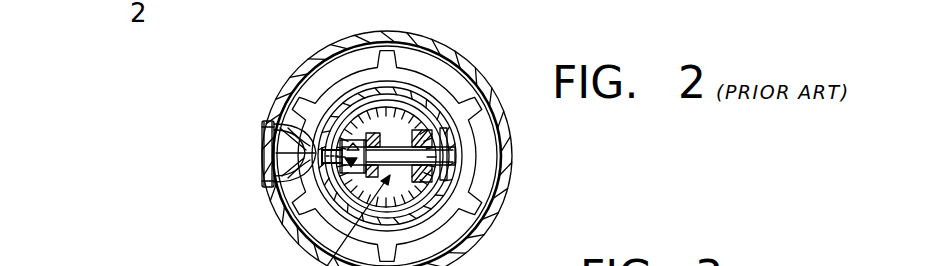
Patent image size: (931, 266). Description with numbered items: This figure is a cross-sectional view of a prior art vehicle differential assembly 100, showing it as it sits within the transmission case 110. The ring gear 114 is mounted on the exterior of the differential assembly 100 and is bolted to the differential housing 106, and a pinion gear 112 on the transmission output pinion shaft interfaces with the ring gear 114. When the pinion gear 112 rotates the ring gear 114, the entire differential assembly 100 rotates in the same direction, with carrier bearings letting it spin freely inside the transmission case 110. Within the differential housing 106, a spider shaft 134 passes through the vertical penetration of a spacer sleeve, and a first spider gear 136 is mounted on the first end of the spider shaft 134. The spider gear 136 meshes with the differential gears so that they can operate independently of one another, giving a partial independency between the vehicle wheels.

The differential assembly 100 is at (513, 139).
The differential housing 106 is at (422, 265).
The transmission case 110 is at (284, 253).
The pinion gear 112 is at (283, 161).
The ring gear 114 is at (303, 78).
The spider shaft 134 is at (397, 150).
The first spider gear 136 is at (346, 173).